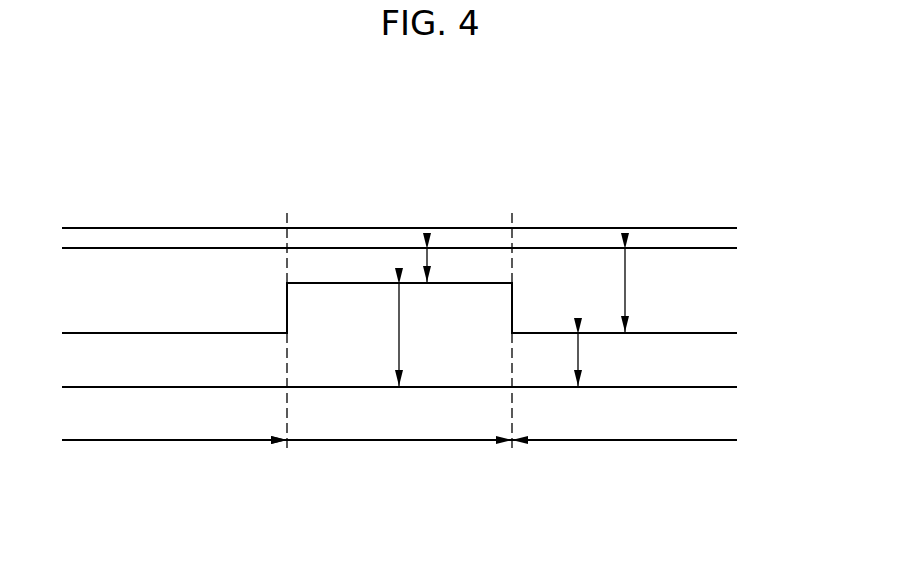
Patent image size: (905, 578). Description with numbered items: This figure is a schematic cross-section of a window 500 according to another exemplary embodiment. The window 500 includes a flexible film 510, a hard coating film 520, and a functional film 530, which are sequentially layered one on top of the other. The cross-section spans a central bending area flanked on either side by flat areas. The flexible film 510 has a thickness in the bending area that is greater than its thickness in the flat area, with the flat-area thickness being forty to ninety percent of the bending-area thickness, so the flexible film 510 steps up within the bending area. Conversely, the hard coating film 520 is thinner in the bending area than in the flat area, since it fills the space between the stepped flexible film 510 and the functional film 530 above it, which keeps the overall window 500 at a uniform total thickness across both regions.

The window 500 is at (409, 168).
The flexible film 510 is at (732, 367).
The hard coating film 520 is at (732, 297).
The functional film 530 is at (732, 239).